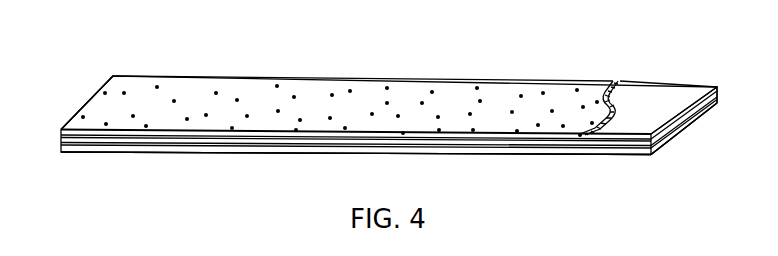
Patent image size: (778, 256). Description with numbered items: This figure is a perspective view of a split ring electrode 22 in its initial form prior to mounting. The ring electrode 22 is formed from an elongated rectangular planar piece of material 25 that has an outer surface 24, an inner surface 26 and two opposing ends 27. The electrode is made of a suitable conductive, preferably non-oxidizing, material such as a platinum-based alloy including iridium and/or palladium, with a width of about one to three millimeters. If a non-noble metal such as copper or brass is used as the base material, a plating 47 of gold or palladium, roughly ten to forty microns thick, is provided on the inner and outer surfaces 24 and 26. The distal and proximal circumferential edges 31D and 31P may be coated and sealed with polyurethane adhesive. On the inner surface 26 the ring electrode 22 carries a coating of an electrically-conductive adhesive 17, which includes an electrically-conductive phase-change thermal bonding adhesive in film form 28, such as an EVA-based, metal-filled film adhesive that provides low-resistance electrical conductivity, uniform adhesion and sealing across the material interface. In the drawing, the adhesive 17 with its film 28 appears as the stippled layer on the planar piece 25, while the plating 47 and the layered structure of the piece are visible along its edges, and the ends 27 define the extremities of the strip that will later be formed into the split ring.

The electrically-conductive adhesive 17 is at (252, 91).
The ring electrode 22 is at (407, 184).
The outer surface 24 is at (593, 153).
The elongated rectangular planar piece of material 25 is at (200, 153).
The inner surface 26 is at (653, 100).
The opposing ends 27 is at (84, 105).
The electrically-conductive phase-change thermal bonding adhesive in film form 28 is at (504, 91).
The distal circumferential edge 31D is at (383, 67).
The proximal circumferential edge 31P is at (295, 162).
The plating 47 is at (60, 137).